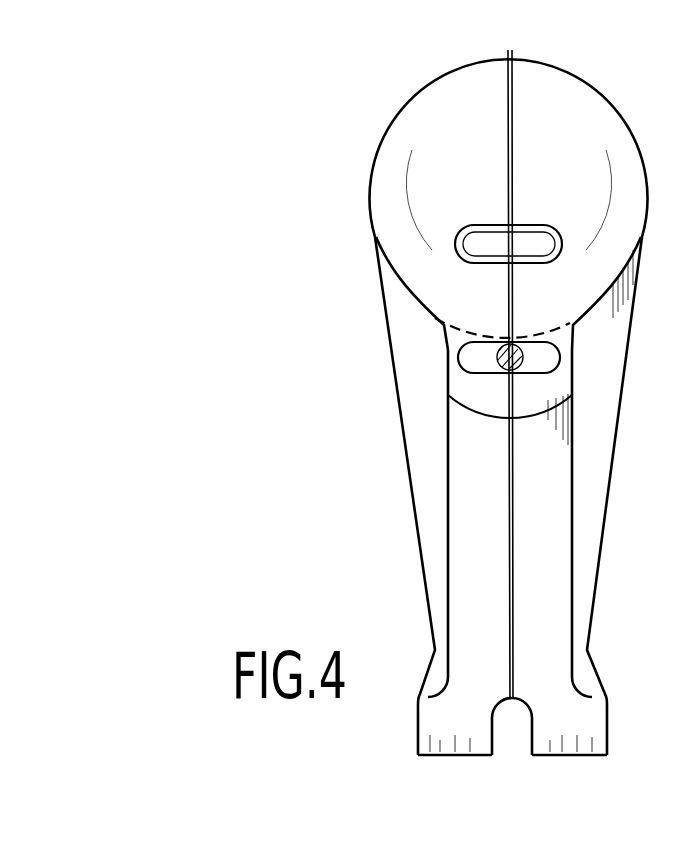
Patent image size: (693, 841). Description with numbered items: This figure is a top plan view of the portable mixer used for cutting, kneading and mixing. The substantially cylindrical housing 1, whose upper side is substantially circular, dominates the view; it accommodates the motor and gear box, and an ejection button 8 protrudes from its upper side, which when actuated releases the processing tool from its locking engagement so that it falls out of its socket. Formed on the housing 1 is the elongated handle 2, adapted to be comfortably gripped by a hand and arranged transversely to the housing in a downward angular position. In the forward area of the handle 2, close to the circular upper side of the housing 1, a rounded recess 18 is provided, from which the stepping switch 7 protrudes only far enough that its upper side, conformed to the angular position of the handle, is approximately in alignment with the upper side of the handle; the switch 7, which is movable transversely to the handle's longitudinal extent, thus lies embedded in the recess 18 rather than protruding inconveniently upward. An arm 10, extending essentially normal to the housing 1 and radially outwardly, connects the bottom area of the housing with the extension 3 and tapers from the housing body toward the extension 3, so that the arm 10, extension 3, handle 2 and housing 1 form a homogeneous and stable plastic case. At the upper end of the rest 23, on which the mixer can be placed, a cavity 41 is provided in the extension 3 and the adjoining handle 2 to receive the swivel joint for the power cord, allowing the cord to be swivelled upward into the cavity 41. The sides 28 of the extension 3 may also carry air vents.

The housing 1 is at (408, 168).
The handle 2 is at (468, 635).
The extension 3 is at (446, 743).
The stepping switch 7 is at (498, 358).
The ejection button 8 is at (480, 243).
The arm 10 is at (438, 542).
The recess 18 is at (565, 337).
The rest 23 is at (572, 743).
The sides of the extension 28 is at (418, 732).
The cavity 41 is at (535, 710).